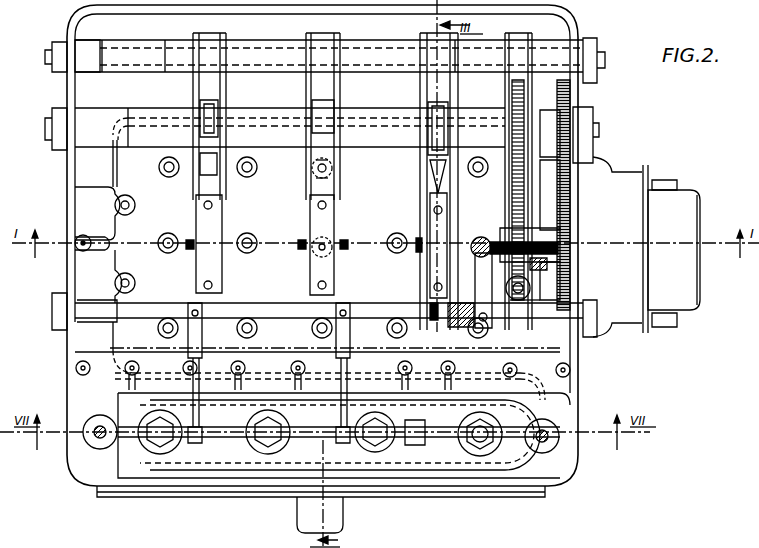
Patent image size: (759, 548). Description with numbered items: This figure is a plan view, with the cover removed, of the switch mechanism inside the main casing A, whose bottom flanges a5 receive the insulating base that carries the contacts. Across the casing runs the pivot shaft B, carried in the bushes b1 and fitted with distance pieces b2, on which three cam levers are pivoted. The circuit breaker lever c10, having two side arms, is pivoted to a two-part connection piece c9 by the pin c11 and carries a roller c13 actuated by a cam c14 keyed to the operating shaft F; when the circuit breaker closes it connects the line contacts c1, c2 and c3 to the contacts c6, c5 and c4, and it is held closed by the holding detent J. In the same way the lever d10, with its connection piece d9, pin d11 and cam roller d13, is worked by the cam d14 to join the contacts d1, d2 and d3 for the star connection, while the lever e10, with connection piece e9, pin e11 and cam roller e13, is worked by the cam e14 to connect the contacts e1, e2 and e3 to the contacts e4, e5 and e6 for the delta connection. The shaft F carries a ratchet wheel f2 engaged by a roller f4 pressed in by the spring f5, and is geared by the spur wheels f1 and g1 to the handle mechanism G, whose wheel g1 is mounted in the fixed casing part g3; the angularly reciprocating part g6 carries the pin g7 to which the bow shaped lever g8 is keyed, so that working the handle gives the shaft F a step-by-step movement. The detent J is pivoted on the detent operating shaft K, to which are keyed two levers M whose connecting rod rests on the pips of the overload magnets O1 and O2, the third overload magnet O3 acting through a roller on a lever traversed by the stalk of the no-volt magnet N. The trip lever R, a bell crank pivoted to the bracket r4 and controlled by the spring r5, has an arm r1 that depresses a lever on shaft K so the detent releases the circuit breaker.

The main casing A is at (72, 24).
The shaft B is at (268, 46).
The bushes b1 is at (88, 48).
The distance pieces b2 is at (166, 38).
The operating shaft F is at (152, 126).
The cam roller e13 is at (204, 110).
The lever e10 is at (224, 96).
The cam e14 is at (210, 176).
The connection piece e9 is at (212, 222).
The pin e11 is at (190, 250).
The contact e6 is at (159, 169).
The contact e3 is at (248, 178).
The contact e5 is at (166, 254).
The contact e2 is at (247, 254).
The contact e4 is at (158, 332).
The contact e1 is at (238, 331).
The flanges a5 is at (136, 206).
The lever d10 is at (312, 96).
The cam roller d13 is at (318, 128).
The connection piece d9 is at (327, 226).
The contact d2 is at (314, 255).
The pin d11 is at (343, 252).
The contact d3 is at (312, 178).
The cam d14 is at (338, 176).
The contact d1 is at (312, 331).
The lever c10 is at (450, 88).
The roller c13 is at (440, 108).
The cam c14 is at (432, 148).
The contact c6 is at (430, 196).
The two-part connection piece c9 is at (420, 226).
The contact c3 is at (477, 178).
The contact c5 is at (396, 254).
The contact c4 is at (388, 332).
The contact c1 is at (470, 337).
The contact c2 is at (476, 238).
The pin c11 is at (474, 262).
The holding detent J is at (428, 310).
The arm r1 is at (494, 240).
The trip lever R is at (530, 228).
The spring r5 is at (528, 262).
The bracket r4 is at (531, 288).
The roller f4 is at (508, 132).
The ratchet wheel f2 is at (524, 92).
The spring f5 is at (528, 176).
The spur wheel f1 is at (562, 116).
The spur wheel g1 is at (570, 214).
The fixed part g3 is at (608, 170).
The handle mechanism G is at (672, 161).
The pin g7 is at (666, 192).
The angularly reciprocating part g6 is at (690, 204).
The bow shaped lever g8 is at (666, 328).
The detent operating shaft K is at (265, 312).
The levers M is at (214, 346).
The no-volt magnet N is at (484, 458).
The overload magnet O1 is at (152, 452).
The overload magnet O2 is at (262, 455).
The third overload magnet O3 is at (378, 453).